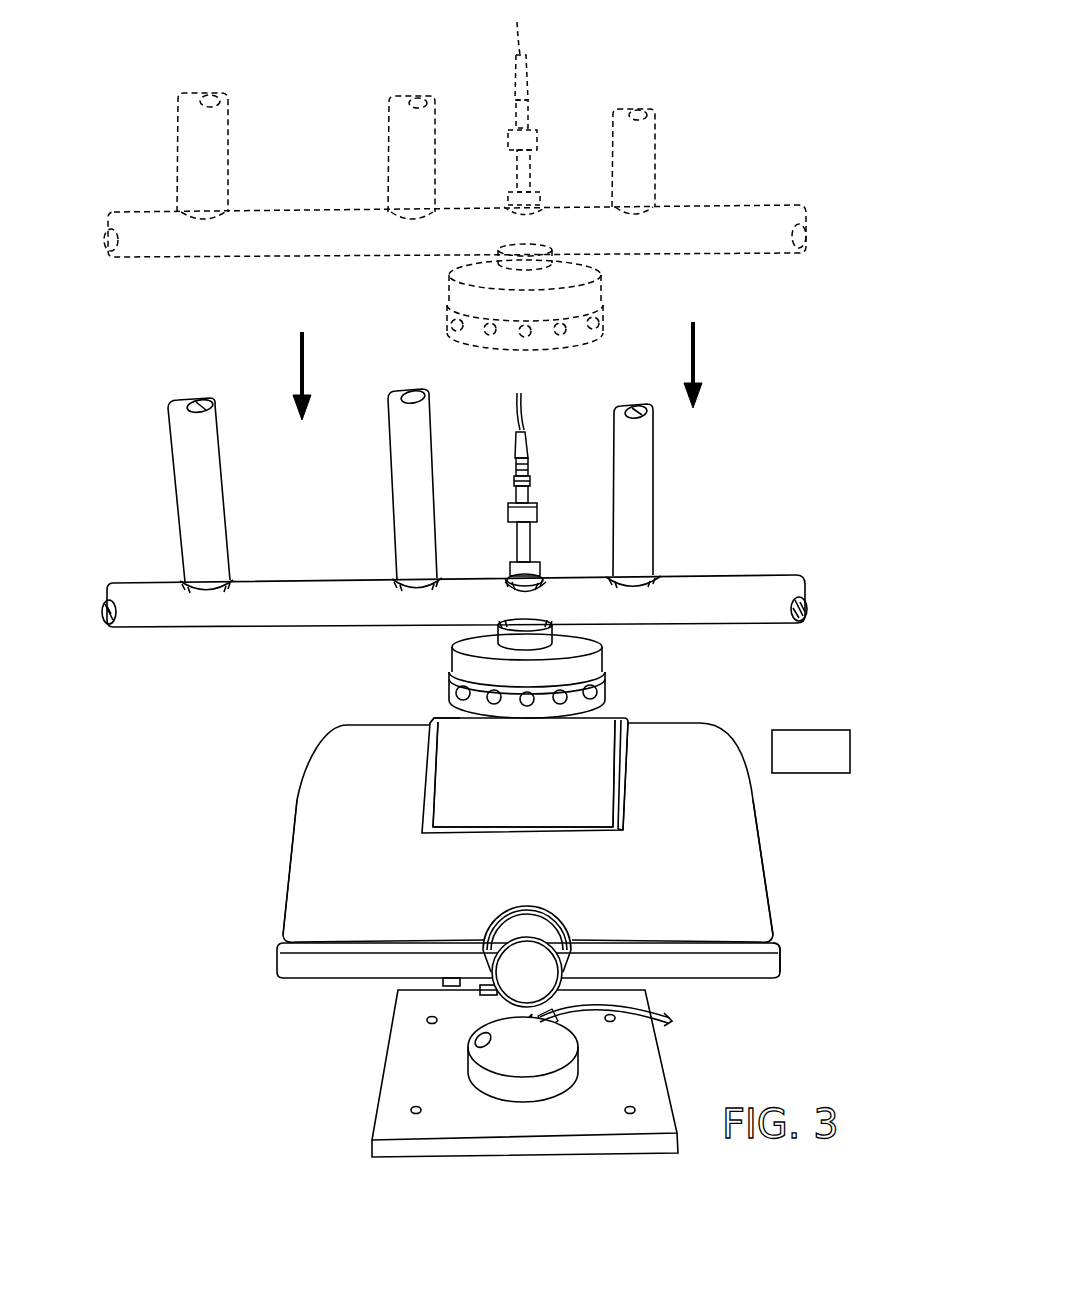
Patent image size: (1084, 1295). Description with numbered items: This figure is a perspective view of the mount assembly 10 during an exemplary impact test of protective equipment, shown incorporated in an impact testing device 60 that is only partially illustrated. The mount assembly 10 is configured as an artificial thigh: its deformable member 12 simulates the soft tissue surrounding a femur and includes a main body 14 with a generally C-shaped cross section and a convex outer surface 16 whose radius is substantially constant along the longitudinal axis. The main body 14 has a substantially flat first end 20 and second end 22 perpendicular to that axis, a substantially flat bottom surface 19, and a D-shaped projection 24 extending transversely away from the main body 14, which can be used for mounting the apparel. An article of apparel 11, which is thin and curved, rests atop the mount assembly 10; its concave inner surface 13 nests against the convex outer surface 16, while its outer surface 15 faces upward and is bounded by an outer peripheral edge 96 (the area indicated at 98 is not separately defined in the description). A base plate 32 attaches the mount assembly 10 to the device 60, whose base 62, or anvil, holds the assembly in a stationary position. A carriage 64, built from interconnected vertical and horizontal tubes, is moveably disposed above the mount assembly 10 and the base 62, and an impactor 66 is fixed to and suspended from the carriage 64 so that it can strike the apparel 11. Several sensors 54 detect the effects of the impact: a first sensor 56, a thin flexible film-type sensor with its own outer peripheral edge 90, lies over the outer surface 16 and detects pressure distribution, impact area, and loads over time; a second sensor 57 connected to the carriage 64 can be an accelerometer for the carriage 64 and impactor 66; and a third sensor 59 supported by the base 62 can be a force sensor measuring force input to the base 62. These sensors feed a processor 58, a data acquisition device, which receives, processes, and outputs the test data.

The mount assembly 10 is at (491, 912).
The article of apparel 11 is at (439, 725).
The deformable member 12 is at (762, 862).
The inner surface 13 is at (442, 781).
The main body 14 is at (743, 882).
The outer surface 15 is at (542, 833).
The outer surface 16 is at (421, 888).
The bottom surface 19 is at (735, 943).
The first end 20 is at (770, 835).
The second end 22 is at (295, 817).
The projection 24 is at (533, 932).
The base plate 32 is at (297, 972).
The sensors 54 is at (542, 541).
The first sensor 56 is at (625, 818).
The second sensor 57 is at (521, 552).
The processor 58 is at (851, 743).
The third sensor 59 is at (534, 1025).
The impact testing device 60 is at (148, 130).
The base 62 is at (649, 1066).
The carriage 64 is at (641, 546).
The impactor 66 is at (612, 300).
The outer peripheral edge 90 is at (632, 797).
The outer peripheral edge 96 is at (630, 768).
The window opening 98 is at (565, 752).